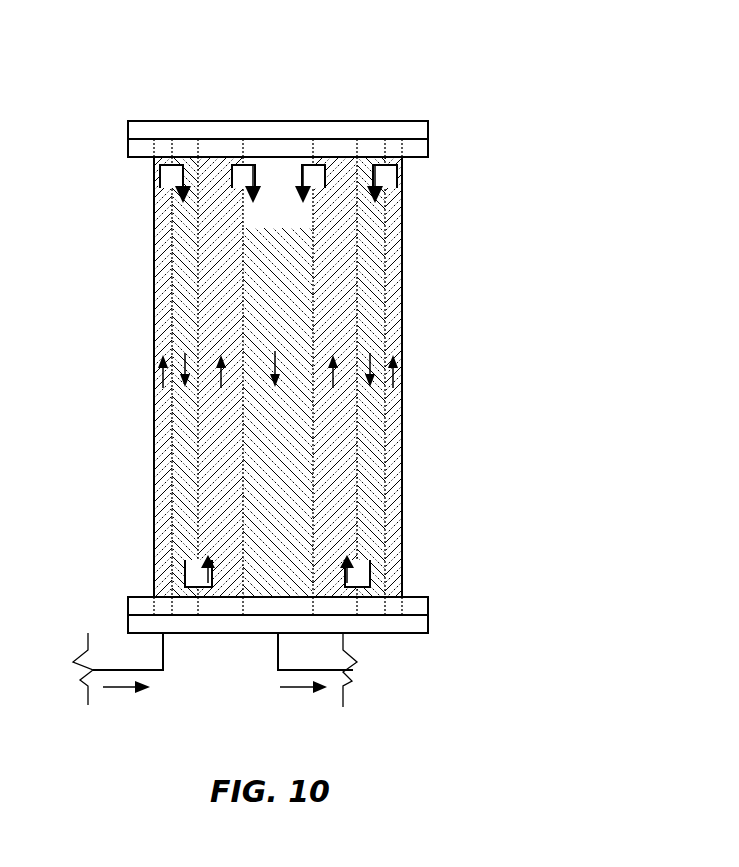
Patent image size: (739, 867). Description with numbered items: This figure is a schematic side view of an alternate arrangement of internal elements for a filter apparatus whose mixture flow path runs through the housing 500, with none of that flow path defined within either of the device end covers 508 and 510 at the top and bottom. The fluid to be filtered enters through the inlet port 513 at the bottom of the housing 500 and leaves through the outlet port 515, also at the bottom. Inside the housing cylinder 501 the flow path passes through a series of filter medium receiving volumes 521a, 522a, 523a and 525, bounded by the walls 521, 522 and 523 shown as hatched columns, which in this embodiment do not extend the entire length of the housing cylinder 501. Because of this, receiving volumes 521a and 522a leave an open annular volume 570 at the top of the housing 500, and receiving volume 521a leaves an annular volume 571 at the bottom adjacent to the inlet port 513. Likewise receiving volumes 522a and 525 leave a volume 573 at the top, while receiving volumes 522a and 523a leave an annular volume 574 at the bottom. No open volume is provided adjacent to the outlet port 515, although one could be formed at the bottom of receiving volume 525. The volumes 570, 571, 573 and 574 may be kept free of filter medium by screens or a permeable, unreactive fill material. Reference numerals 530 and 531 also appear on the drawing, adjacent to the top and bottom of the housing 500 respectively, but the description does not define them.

The housing 500 is at (492, 286).
The housing cylinder 501 is at (155, 203).
The device end cover 508 is at (418, 122).
The device end cover 510 is at (420, 633).
The inlet port 513 is at (166, 636).
The outlet port 515 is at (275, 606).
The filter medium receiving volume wall 521 is at (162, 238).
The filter medium receiving volume 521a is at (165, 266).
The filter medium receiving volume wall 522 is at (193, 310).
The filter medium receiving volume 522a is at (183, 338).
The filter medium receiving volume wall 523 is at (242, 415).
The filter medium receiving volume 523a is at (218, 445).
The filter medium receiving volume 525 is at (291, 303).
The inlet passage 530 is at (377, 160).
The lower channel 531 is at (148, 603).
The annular volume 570 is at (184, 160).
The annular volume 571 is at (393, 608).
The volume 573 is at (282, 175).
The annular volume 574 is at (212, 606).